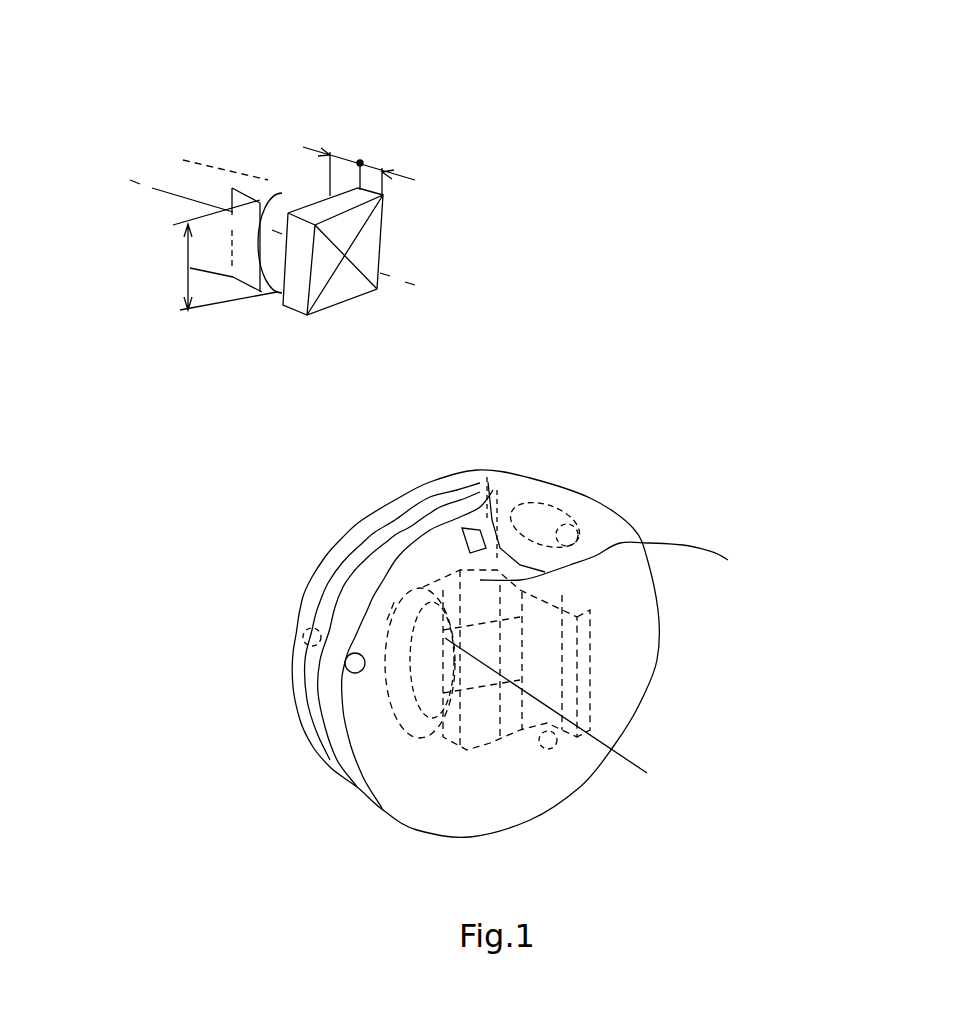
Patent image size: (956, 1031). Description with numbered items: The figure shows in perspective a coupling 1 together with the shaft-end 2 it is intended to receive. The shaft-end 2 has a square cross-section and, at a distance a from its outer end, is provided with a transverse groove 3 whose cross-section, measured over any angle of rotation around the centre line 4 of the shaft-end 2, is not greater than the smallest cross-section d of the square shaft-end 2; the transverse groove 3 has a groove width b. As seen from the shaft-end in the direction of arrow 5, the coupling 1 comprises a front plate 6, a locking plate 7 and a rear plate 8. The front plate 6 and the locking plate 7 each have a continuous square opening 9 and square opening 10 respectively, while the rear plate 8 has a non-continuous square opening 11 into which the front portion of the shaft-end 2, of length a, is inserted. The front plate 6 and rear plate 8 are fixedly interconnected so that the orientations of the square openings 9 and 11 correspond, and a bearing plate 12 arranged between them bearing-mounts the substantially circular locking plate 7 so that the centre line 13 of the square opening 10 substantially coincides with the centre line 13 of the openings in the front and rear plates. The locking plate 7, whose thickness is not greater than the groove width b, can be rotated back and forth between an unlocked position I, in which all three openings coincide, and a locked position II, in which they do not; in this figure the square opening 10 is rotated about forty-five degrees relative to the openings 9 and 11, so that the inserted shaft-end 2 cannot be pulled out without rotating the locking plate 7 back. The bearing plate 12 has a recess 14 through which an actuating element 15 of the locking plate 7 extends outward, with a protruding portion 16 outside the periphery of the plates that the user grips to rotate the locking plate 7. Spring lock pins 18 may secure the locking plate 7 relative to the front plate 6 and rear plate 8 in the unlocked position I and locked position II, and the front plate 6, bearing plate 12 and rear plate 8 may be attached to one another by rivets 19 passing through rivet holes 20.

The coupling 1 is at (668, 494).
The shaft-end 2 is at (353, 120).
The transverse groove 3 is at (297, 200).
The centre line 4 is at (378, 290).
The arrow 5 is at (265, 511).
The front plate 6 is at (300, 672).
The locking plate 7 is at (400, 683).
The rear plate 8 is at (338, 762).
The square opening 9 is at (443, 638).
The square opening 10 is at (420, 615).
The square opening 11 is at (438, 743).
The bearing plate 12 is at (332, 612).
The centre line 13 is at (590, 733).
The recess 14 is at (410, 517).
The actuating element 15 is at (493, 488).
The protruding portion 16 is at (463, 488).
The spring lock pin 18 is at (623, 564).
The rivet 19 is at (436, 610).
The rivet hole 20 is at (553, 518).
The distance a is at (362, 164).
The groove width b is at (347, 154).
The smallest cross-section d is at (192, 270).
The unlocked position I is at (282, 559).
The locked position II is at (509, 440).